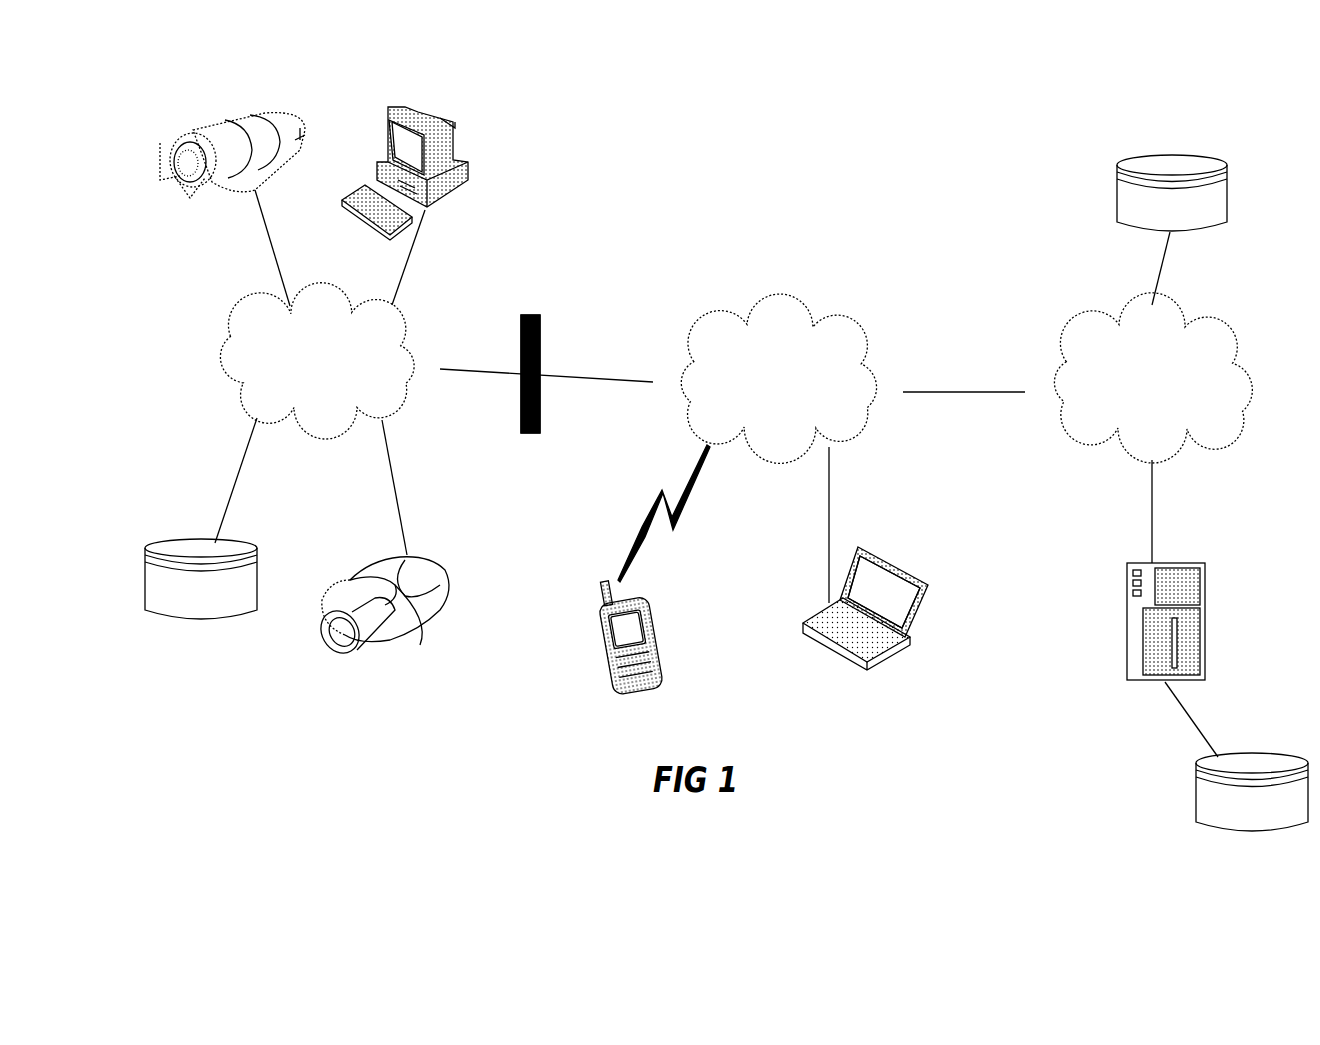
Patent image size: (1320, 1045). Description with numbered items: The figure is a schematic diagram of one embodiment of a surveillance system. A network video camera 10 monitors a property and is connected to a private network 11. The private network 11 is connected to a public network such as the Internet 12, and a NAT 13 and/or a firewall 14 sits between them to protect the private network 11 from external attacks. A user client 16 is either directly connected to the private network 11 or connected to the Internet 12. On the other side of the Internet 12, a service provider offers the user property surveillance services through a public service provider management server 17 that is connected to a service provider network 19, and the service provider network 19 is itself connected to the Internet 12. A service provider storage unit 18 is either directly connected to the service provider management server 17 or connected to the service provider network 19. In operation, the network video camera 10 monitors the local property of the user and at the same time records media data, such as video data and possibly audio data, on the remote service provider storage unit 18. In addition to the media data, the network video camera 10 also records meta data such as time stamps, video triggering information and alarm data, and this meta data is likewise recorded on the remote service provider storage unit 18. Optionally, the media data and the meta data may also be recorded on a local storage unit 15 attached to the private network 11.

The network video camera 10 is at (286, 132).
The private network 11 is at (427, 345).
The Internet 12 is at (783, 312).
The NAT 13 is at (535, 313).
The firewall 14 is at (531, 435).
The local storage unit 15 is at (222, 607).
The user client 16 is at (449, 122).
The service provider management server 17 is at (1138, 663).
The service provider storage unit 18 is at (1157, 158).
The service provider network 19 is at (1222, 337).